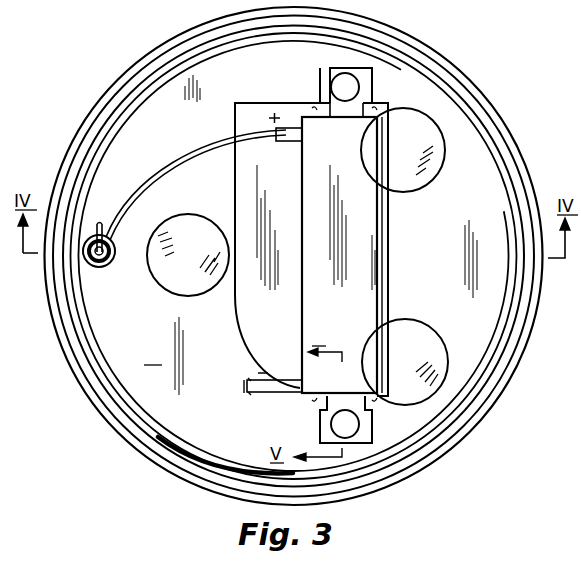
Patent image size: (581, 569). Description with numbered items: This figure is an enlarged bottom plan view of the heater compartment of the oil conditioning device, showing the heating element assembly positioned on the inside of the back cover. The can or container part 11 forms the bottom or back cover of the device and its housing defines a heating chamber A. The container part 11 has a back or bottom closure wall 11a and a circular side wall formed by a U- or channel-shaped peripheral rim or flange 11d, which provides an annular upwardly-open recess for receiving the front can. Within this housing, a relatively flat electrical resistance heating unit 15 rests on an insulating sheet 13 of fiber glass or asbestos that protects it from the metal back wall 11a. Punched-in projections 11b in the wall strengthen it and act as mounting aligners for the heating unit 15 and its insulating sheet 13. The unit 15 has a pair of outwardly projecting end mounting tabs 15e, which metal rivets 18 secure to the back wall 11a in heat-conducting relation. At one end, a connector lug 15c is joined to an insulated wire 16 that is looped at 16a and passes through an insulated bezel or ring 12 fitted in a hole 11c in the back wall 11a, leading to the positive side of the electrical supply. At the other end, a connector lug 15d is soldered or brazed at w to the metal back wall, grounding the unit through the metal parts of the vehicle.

The container part 11 is at (133, 66).
The back wall 11a is at (168, 418).
The punched-in projections 11b is at (181, 222).
The hole 11c is at (97, 268).
The peripheral rim 11d is at (196, 464).
The insulated bezel 12 is at (112, 262).
The insulating sheet 13 is at (247, 328).
The heating unit 15 is at (379, 237).
The connector lug 15c is at (292, 142).
The connector lug 15d is at (270, 393).
The end mounting tabs 15e is at (322, 76).
The insulated wire 16 is at (207, 134).
The loop 16a is at (100, 222).
The metal rivets 18 is at (333, 91).
The heating chamber A is at (152, 356).
The solder or braze joint w is at (245, 384).